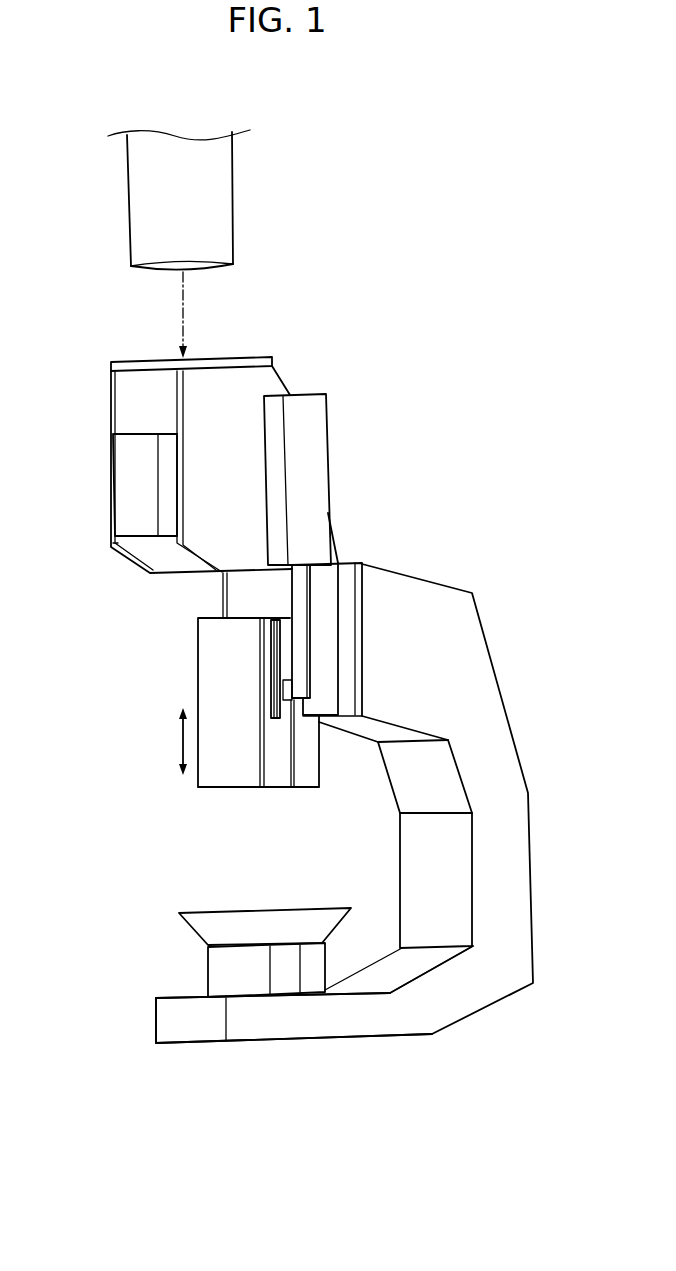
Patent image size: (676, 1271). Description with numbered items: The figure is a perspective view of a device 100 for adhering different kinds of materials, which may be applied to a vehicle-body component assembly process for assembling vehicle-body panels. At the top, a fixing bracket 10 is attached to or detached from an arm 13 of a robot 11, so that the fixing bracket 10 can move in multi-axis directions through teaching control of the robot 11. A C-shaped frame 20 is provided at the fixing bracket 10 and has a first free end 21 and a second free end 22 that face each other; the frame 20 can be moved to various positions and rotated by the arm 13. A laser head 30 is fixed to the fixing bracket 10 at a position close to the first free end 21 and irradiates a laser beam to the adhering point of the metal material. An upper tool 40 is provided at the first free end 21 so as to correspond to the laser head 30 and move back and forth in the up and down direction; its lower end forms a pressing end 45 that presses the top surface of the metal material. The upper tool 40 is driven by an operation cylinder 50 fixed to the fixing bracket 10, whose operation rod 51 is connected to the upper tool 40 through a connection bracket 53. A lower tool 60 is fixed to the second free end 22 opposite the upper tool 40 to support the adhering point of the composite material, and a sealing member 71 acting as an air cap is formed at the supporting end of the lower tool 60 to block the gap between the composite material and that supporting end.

The device for adhering different kinds of materials 100 is at (265, 96).
The fixing bracket 10 is at (233, 357).
The robot 11 is at (257, 201).
The arm 13 is at (127, 209).
The frame 20 is at (534, 744).
The first free end 21 is at (347, 602).
The second free end 22 is at (265, 1041).
The laser head 30 is at (137, 482).
The upper tool 40 is at (185, 684).
The pressing end 45 is at (248, 789).
The operation cylinder 50 is at (310, 444).
The operation rod 51 is at (300, 640).
The connection bracket 53 is at (277, 648).
The lower tool 60 is at (195, 967).
The sealing member 71 is at (213, 927).